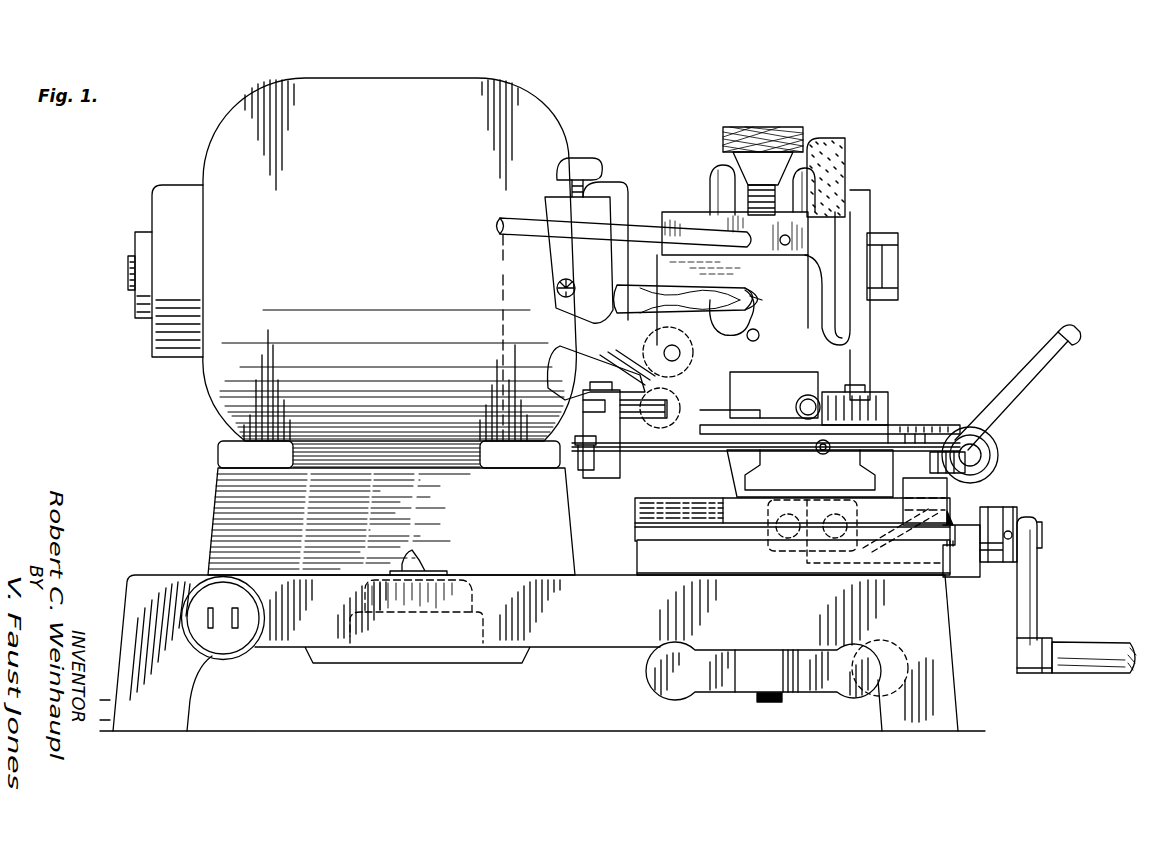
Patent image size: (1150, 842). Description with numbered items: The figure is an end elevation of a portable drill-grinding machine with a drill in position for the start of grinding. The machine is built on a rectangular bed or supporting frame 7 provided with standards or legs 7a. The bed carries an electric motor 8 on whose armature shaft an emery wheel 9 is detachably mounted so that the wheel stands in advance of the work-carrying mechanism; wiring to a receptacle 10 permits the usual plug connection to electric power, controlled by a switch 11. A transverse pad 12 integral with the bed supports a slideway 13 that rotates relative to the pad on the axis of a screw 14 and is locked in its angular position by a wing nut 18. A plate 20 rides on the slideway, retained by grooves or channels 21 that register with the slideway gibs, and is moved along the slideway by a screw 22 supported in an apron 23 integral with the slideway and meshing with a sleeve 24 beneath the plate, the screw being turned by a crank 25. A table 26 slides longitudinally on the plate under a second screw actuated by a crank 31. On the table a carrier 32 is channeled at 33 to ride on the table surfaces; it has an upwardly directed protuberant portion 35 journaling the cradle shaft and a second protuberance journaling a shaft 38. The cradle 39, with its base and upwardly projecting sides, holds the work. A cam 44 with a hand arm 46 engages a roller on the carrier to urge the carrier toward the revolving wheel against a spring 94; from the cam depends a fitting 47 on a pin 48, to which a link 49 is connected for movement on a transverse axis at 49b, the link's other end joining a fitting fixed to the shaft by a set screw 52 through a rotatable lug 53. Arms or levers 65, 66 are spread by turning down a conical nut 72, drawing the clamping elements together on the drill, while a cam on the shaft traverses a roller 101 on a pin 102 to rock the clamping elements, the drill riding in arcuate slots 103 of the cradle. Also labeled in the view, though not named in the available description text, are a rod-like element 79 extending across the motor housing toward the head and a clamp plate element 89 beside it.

The bed or supporting frame 7 is at (568, 637).
The standards or legs 7a is at (930, 648).
The electric motor 8 is at (220, 388).
The emery wheel 9 is at (825, 140).
The receptacle 10 is at (232, 640).
The switch 11 is at (414, 570).
The pad 12 is at (650, 552).
The slideway 13 is at (648, 534).
The screw 14 is at (777, 702).
The wing nut 18 is at (713, 683).
The plate 20 is at (937, 490).
The grooves or channels 21 is at (635, 514).
The screw 22 is at (957, 548).
The apron 23 is at (978, 573).
The sleeve 24 is at (846, 567).
The crank 25 is at (1038, 613).
The table 26 is at (980, 484).
The crank 31 is at (1036, 365).
The carrier 32 is at (915, 428).
The channel 33 is at (995, 450).
The protuberant portion 35 is at (752, 385).
The shaft 38 is at (690, 406).
The cradle 39 is at (825, 348).
The cam 44 is at (895, 428).
The arm or extension 46 is at (955, 422).
The fitting 47 is at (862, 460).
The pin 48 is at (840, 422).
The link 49 is at (682, 452).
The transverse pivot connection 49b is at (815, 452).
The set screw 52 is at (615, 430).
The lug 53 is at (578, 457).
The arm or lever 65 is at (848, 180).
The arm or lever 66 is at (716, 180).
The conical nut 72 is at (720, 138).
The pivot rod 79 is at (643, 227).
The clamp plate 89 is at (586, 240).
The spring 94 is at (801, 399).
The roller 101 is at (648, 305).
The pin 102 is at (682, 353).
The arcuate slots 103 is at (758, 305).